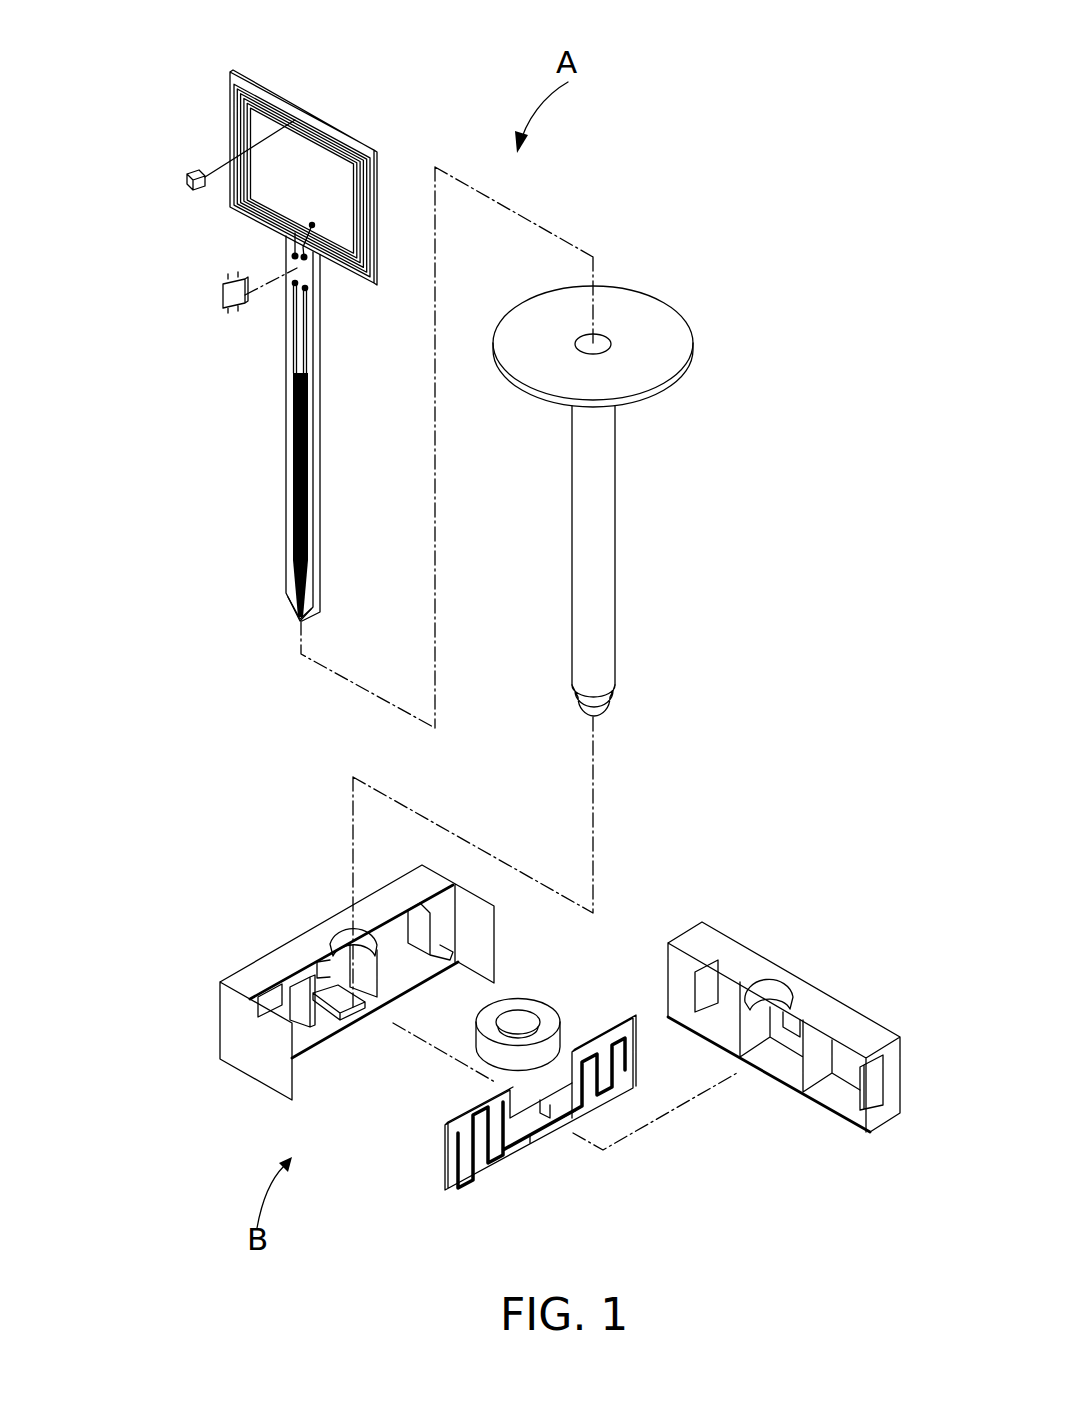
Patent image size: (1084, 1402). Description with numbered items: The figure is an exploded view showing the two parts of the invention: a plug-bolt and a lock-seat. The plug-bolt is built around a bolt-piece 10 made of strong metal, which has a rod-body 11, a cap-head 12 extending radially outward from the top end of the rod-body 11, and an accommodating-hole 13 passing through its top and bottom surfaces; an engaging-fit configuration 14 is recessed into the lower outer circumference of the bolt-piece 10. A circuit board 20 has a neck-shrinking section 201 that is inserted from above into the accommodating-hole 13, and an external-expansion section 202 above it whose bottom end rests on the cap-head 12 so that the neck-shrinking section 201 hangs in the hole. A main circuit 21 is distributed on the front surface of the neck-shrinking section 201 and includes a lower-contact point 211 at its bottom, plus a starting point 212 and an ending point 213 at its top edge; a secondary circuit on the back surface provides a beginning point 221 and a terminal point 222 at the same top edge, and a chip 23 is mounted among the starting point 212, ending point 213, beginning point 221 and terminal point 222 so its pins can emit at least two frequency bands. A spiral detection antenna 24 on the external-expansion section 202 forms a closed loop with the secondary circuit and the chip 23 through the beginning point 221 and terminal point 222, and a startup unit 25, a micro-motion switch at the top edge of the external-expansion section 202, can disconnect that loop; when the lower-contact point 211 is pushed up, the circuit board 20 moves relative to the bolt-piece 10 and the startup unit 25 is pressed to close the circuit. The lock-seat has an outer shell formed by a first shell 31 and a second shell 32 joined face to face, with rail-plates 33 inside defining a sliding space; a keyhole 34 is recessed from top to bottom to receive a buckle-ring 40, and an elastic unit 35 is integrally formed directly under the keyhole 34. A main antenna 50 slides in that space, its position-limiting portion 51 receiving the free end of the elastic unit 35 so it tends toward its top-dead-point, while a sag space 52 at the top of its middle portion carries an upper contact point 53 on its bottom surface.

The bolt-piece 10 is at (650, 468).
The rod-body 11 is at (758, 490).
The cap-head 12 is at (665, 352).
The accommodating-hole 13 is at (601, 342).
The engaging-fit configuration 14 is at (652, 692).
The circuit board 20 is at (262, 334).
The main circuit 21 is at (310, 375).
The neck-shrinking section 201 is at (316, 525).
The external-expansion section 202 is at (377, 177).
The lower-contact point 211 is at (298, 622).
The starting point 212 is at (295, 286).
The ending point 213 is at (306, 290).
The beginning point 221 is at (293, 254).
The terminal point 222 is at (306, 259).
The chip 23 is at (223, 291).
The detection antenna 24 is at (250, 130).
The startup unit 25 is at (187, 176).
The first shell 31 is at (489, 991).
The second shell 32 is at (810, 983).
The rail-plate 33 is at (300, 992).
The keyhole 34 is at (344, 932).
The elastic unit 35 is at (342, 1020).
The buckle-ring 40 is at (543, 990).
The main antenna 50 is at (524, 1120).
The position-limiting portion 51 is at (545, 1137).
The sag space 52 is at (558, 1075).
The upper contact point 53 is at (540, 1090).